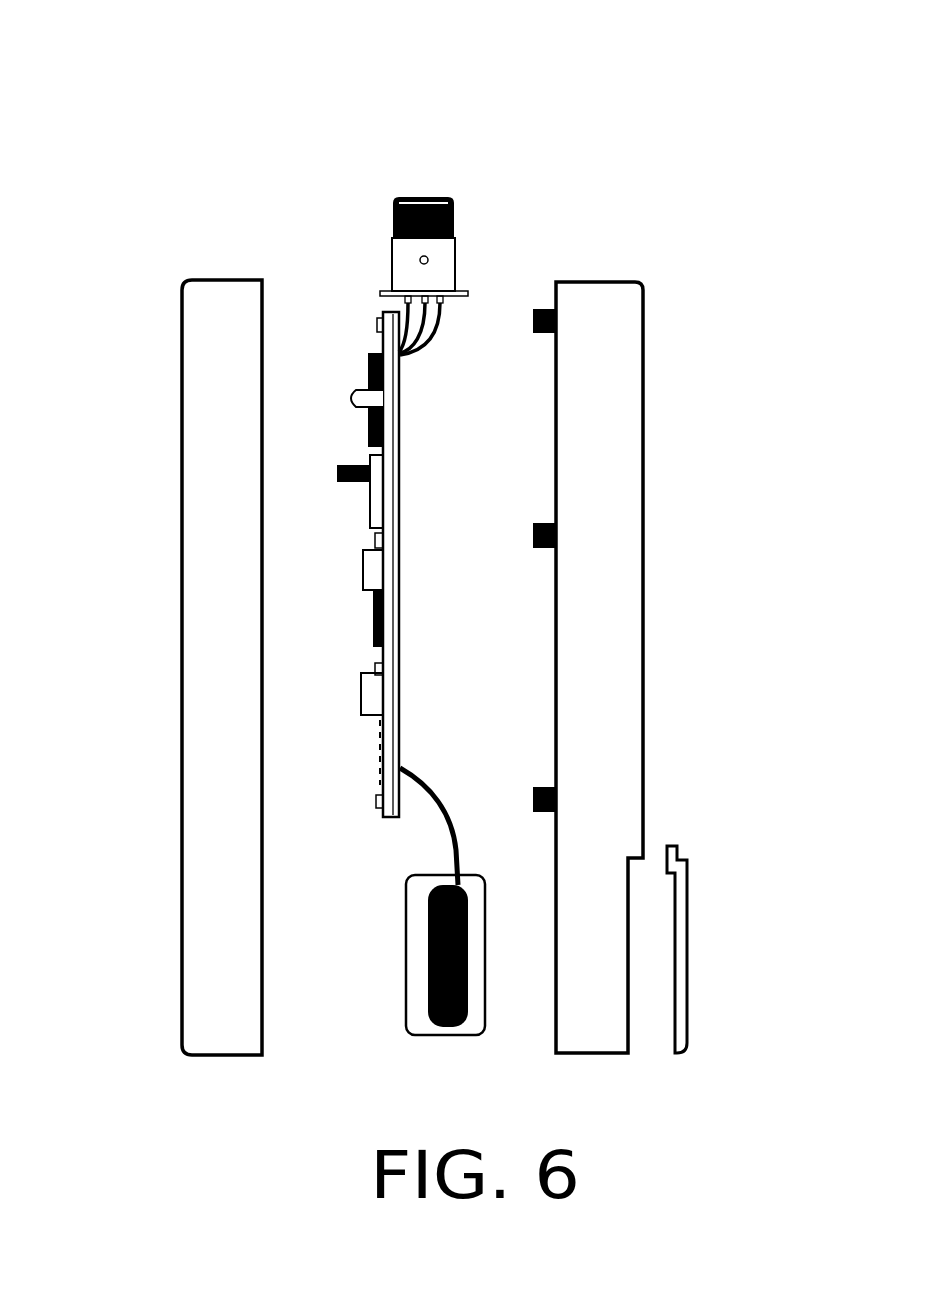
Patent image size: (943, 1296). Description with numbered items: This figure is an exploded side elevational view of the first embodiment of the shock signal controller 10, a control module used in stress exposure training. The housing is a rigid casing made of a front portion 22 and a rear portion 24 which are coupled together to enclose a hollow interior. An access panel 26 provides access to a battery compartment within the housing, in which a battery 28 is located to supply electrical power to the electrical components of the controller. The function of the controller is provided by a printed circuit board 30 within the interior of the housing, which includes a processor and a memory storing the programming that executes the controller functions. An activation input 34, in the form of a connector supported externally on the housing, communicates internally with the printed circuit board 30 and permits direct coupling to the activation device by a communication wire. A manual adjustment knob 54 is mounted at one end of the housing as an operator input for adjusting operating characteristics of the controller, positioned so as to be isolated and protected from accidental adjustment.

The shock signal controller 10 is at (671, 84).
The front portion 22 is at (206, 692).
The rear portion 24 is at (603, 610).
The access panel 26 is at (683, 945).
The battery 28 is at (418, 938).
The printed circuit board 30 is at (388, 350).
The activation input 34 is at (442, 270).
The manual adjustment knob 54 is at (396, 216).